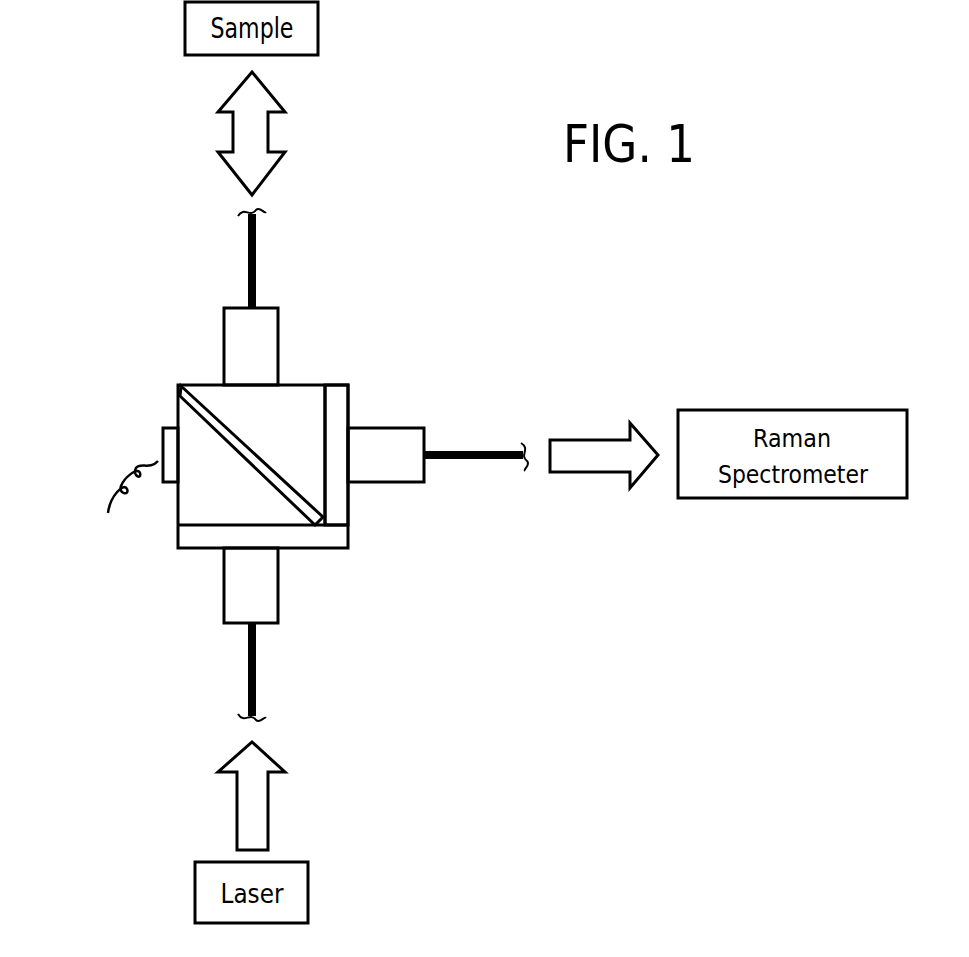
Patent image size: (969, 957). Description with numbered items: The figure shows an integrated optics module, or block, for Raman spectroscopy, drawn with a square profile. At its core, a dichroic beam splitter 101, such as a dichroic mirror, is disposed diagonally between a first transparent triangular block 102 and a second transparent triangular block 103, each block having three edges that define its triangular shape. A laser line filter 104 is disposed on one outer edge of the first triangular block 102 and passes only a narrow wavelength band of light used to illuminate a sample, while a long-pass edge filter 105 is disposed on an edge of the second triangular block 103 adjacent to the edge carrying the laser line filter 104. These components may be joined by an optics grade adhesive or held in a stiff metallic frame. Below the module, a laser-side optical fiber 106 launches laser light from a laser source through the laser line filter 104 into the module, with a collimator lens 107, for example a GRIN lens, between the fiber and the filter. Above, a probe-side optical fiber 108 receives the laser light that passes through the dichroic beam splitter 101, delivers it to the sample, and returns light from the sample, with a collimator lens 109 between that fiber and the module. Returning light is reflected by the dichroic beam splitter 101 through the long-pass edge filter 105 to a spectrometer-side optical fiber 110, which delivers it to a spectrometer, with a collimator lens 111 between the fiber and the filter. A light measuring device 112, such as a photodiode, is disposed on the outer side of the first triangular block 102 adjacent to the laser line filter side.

The dichroic beam splitter 101 is at (178, 387).
The first transparent triangular block 102 is at (193, 507).
The second transparent triangular block 103 is at (310, 405).
The laser line filter 104 is at (307, 548).
The long-pass edge filter 105 is at (335, 517).
The laser-side optical fiber 106 is at (248, 660).
The collimator lens 107 is at (224, 580).
The probe-side optical fiber 108 is at (255, 252).
The collimator lens 109 is at (278, 345).
The spectrometer-side optical fiber 110 is at (472, 462).
The collimator lens 111 is at (390, 483).
The light measuring device 112 is at (163, 448).